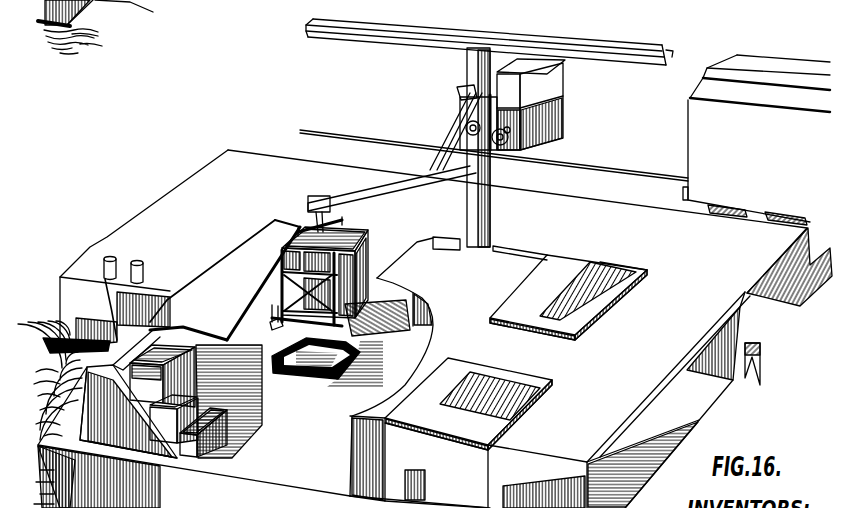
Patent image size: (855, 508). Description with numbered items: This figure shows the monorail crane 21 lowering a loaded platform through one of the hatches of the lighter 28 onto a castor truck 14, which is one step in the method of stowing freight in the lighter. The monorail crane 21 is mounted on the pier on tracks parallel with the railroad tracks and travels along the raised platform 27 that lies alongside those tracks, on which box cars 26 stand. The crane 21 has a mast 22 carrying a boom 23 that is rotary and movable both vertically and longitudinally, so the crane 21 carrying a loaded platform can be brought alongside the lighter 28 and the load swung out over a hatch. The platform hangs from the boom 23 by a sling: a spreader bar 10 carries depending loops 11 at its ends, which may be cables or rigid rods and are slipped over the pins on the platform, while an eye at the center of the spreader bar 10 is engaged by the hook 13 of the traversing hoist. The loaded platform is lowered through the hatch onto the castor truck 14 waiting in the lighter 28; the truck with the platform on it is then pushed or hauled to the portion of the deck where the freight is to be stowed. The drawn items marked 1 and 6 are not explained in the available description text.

The base plate 1 is at (363, 312).
The frame corner fitting 6 is at (278, 321).
The spreader bar 10 is at (250, 233).
The depending loops 11 is at (258, 298).
The hook 13 is at (365, 232).
The castor truck 14 is at (313, 376).
The monorail crane 21 is at (527, 250).
The mast 22 is at (492, 212).
The boom 23 is at (382, 196).
The box cars 26 is at (756, 140).
The raised platform 27 is at (657, 249).
The lighter 28 is at (697, 296).